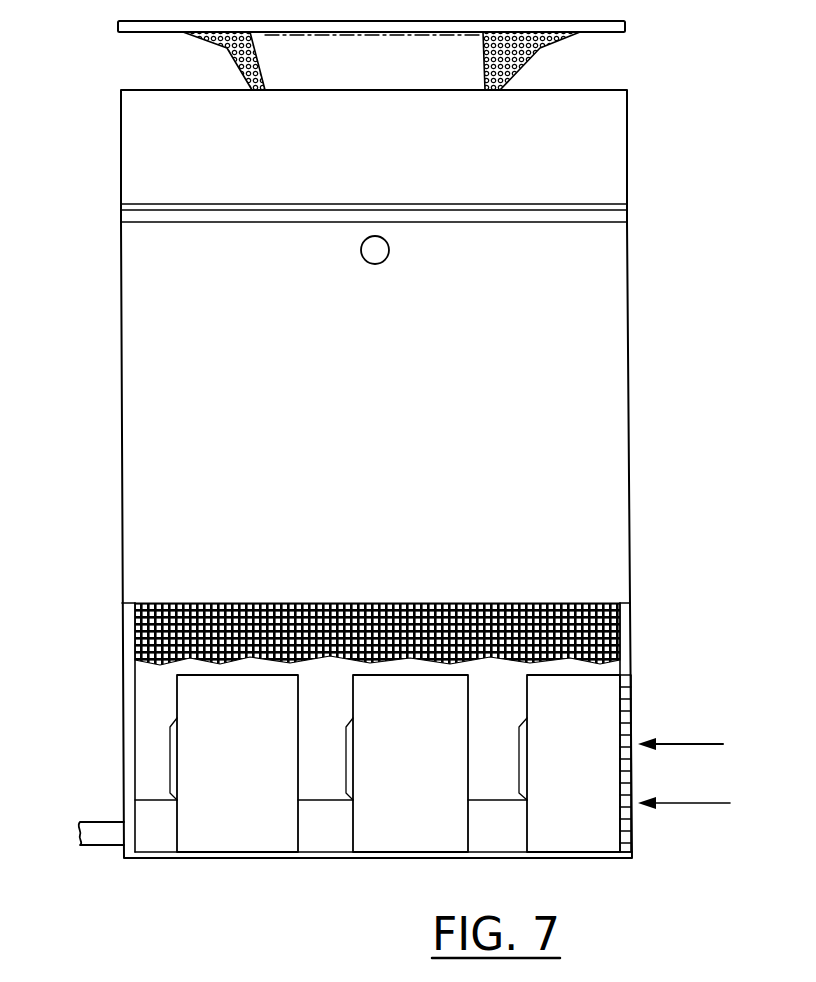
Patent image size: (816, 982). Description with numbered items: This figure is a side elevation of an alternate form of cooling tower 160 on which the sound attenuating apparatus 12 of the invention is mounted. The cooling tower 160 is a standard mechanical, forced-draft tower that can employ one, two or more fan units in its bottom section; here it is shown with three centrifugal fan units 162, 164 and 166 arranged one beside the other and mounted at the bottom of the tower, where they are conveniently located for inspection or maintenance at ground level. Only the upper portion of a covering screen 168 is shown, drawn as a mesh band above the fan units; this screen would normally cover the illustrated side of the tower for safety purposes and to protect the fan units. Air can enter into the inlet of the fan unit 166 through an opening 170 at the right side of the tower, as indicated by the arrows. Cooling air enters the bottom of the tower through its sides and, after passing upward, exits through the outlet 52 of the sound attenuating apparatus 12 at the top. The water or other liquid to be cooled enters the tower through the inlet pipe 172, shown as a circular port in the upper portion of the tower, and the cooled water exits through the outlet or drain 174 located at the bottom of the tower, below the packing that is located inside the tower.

The outlet 52 is at (590, 63).
The sound attenuating apparatus 12 is at (610, 152).
The cooling tower 160 is at (617, 403).
The inlet pipe 172 is at (389, 253).
The covering screen 168 is at (338, 618).
The centrifugal fan unit 162 is at (258, 752).
The centrifugal fan unit 164 is at (433, 752).
The centrifugal fan unit 166 is at (595, 752).
The opening 170 is at (630, 692).
The outlet or drain 174 is at (94, 822).